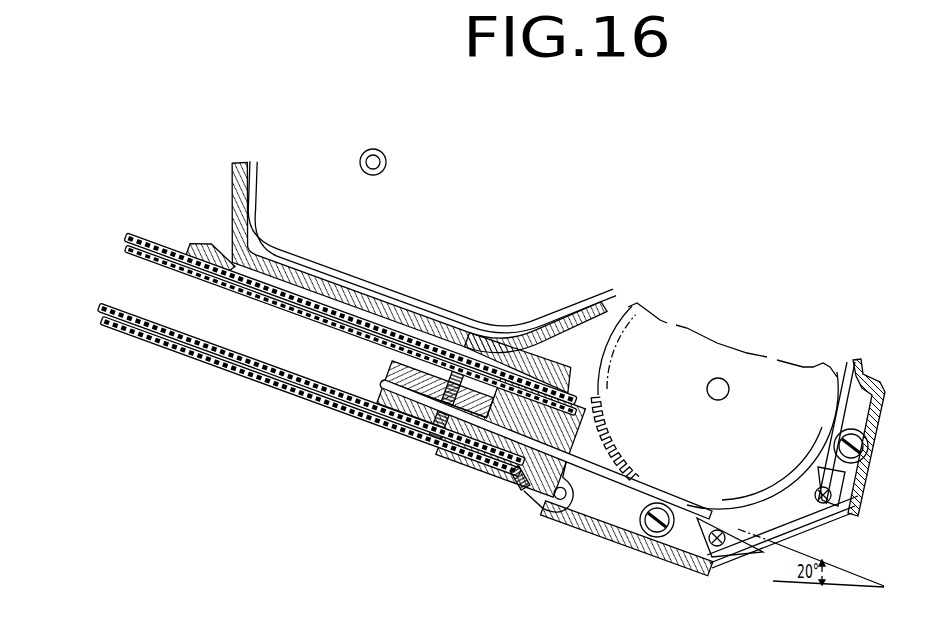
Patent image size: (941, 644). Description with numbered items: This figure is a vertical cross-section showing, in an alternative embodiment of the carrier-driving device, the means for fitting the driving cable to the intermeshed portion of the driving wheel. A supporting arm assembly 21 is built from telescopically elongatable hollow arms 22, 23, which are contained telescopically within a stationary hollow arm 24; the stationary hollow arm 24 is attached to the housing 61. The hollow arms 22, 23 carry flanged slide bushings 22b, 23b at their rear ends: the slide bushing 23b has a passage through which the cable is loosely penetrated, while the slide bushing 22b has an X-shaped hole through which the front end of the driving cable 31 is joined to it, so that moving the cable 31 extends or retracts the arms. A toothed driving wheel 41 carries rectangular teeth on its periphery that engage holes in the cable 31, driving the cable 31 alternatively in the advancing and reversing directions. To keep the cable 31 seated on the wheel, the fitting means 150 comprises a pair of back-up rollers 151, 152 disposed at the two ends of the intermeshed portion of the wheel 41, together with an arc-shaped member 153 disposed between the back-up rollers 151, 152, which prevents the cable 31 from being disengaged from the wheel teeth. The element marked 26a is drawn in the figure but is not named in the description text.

The supporting arm assembly 21 is at (251, 388).
The hollow arm 22 is at (363, 420).
The slide bushing 22b is at (403, 376).
The hollow arm 23 is at (313, 403).
The slide bushing 23b is at (463, 463).
The stationary hollow arm 24 is at (400, 437).
The bracket lug 26a is at (542, 500).
The driving cable 31 is at (592, 510).
The driving wheel 41 is at (720, 353).
The housing 61 is at (873, 483).
The fitting means 150 is at (700, 537).
The back-up roller 151 is at (647, 537).
The back-up roller 152 is at (872, 448).
The arc-shaped member 153 is at (753, 550).